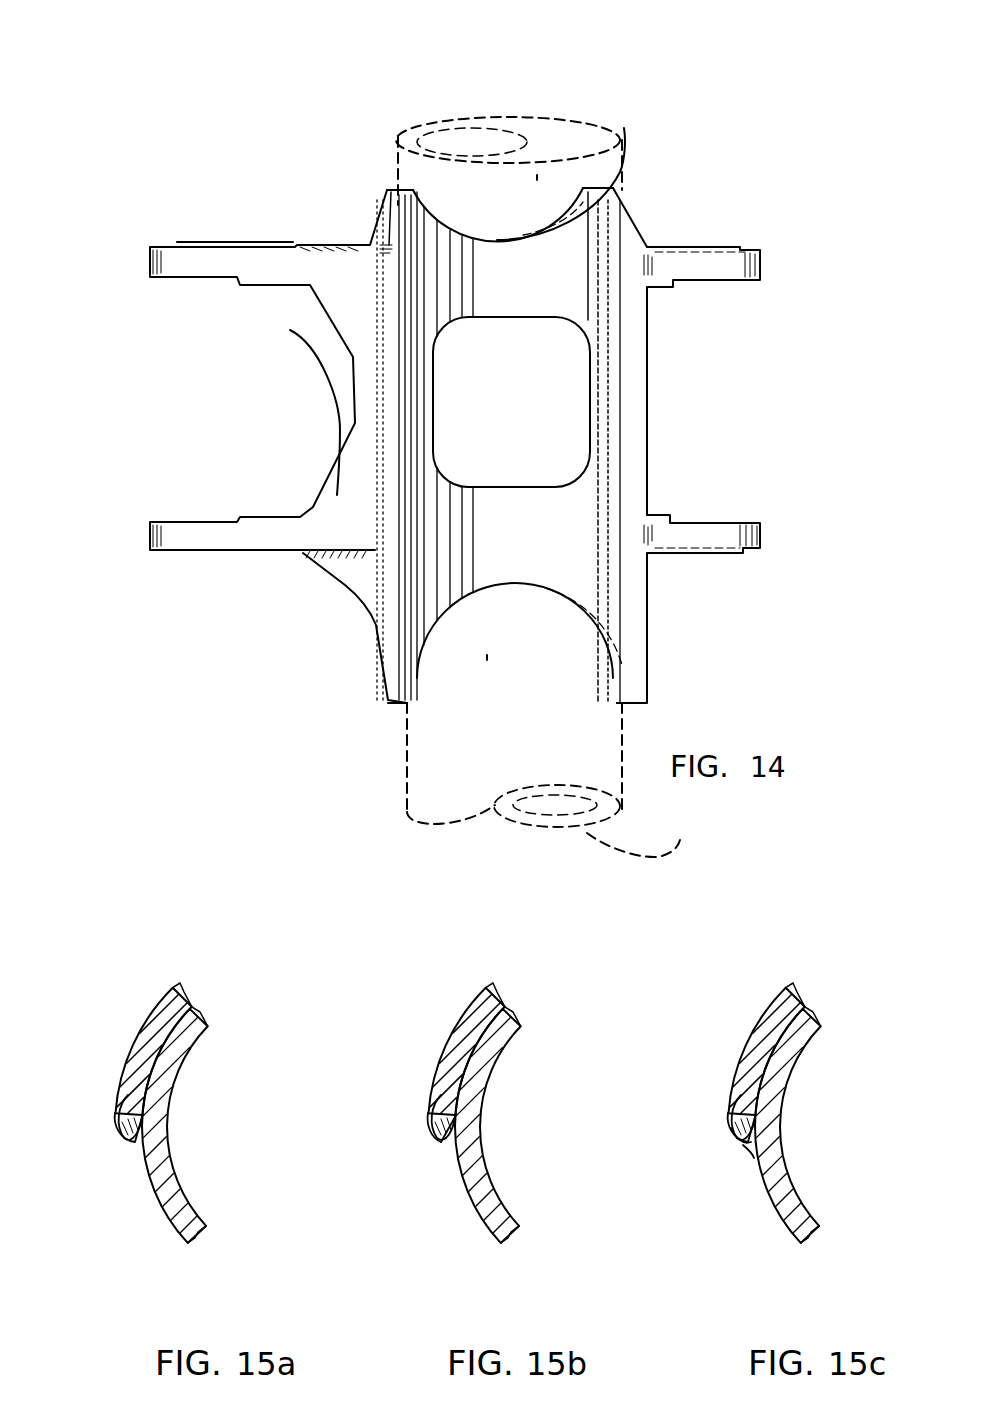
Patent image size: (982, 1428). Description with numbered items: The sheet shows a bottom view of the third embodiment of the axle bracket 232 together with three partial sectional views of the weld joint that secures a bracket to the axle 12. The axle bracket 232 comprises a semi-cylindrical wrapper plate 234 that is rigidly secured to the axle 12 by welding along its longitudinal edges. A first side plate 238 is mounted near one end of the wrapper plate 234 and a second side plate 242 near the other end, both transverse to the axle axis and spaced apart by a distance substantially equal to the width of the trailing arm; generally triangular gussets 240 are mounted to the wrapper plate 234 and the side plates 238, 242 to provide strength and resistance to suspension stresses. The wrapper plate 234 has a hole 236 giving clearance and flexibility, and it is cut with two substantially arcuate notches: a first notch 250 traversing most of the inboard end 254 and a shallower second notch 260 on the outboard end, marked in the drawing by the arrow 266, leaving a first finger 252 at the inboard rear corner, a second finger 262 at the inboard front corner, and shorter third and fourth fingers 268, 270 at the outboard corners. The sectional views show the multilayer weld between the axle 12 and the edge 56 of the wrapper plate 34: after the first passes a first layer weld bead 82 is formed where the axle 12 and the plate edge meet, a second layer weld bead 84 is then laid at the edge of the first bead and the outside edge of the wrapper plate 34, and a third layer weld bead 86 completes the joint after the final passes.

In FIG. 14, the axle 12 is at (663, 856).
In FIG. 15A, the axle 12 is at (173, 1060).
In FIG. 15B, the axle 12 is at (521, 1113).
In FIG. 15C, the axle 12 is at (812, 1113).
In FIG. 15A, the wrapper plate 34 is at (160, 1017).
In FIG. 15B, the wrapper plate 34 is at (451, 1044).
In FIG. 15C, the wrapper plate 34 is at (746, 1046).
In FIG. 15A, the edge 56 is at (123, 1100).
In FIG. 15B, the edge 56 is at (411, 1088).
In FIG. 15C, the edge 56 is at (710, 1088).
In FIG. 15A, the first layer weld bead 82 is at (133, 1140).
In FIG. 15B, the first layer weld bead 82 is at (426, 1156).
In FIG. 15C, the first layer weld bead 82 is at (689, 1134).
In FIG. 15B, the second layer weld bead 84 is at (397, 1144).
In FIG. 15C, the second layer weld bead 84 is at (699, 1158).
In FIG. 15C, the third layer weld bead 86 is at (715, 1181).
In FIG. 14, the axle bracket 232 is at (733, 165).
In FIG. 14, the wrapper plate 234 is at (573, 527).
In FIG. 14, the hole 236 is at (525, 416).
In FIG. 14, the first side plate 238 is at (760, 533).
In FIG. 14, the gussets 240 is at (360, 228).
In FIG. 14, the second side plate 242 is at (203, 263).
In FIG. 14, the first notch 250 is at (493, 585).
In FIG. 14, the first finger 252 is at (393, 695).
In FIG. 14, the inboard end 254 is at (487, 648).
In FIG. 14, the second notch 260 is at (620, 198).
In FIG. 14, the second finger 262 is at (630, 677).
In FIG. 14, the direction of movement 266 is at (536, 186).
In FIG. 14, the third finger 268 is at (392, 195).
In FIG. 14, the fourth finger 270 is at (605, 192).